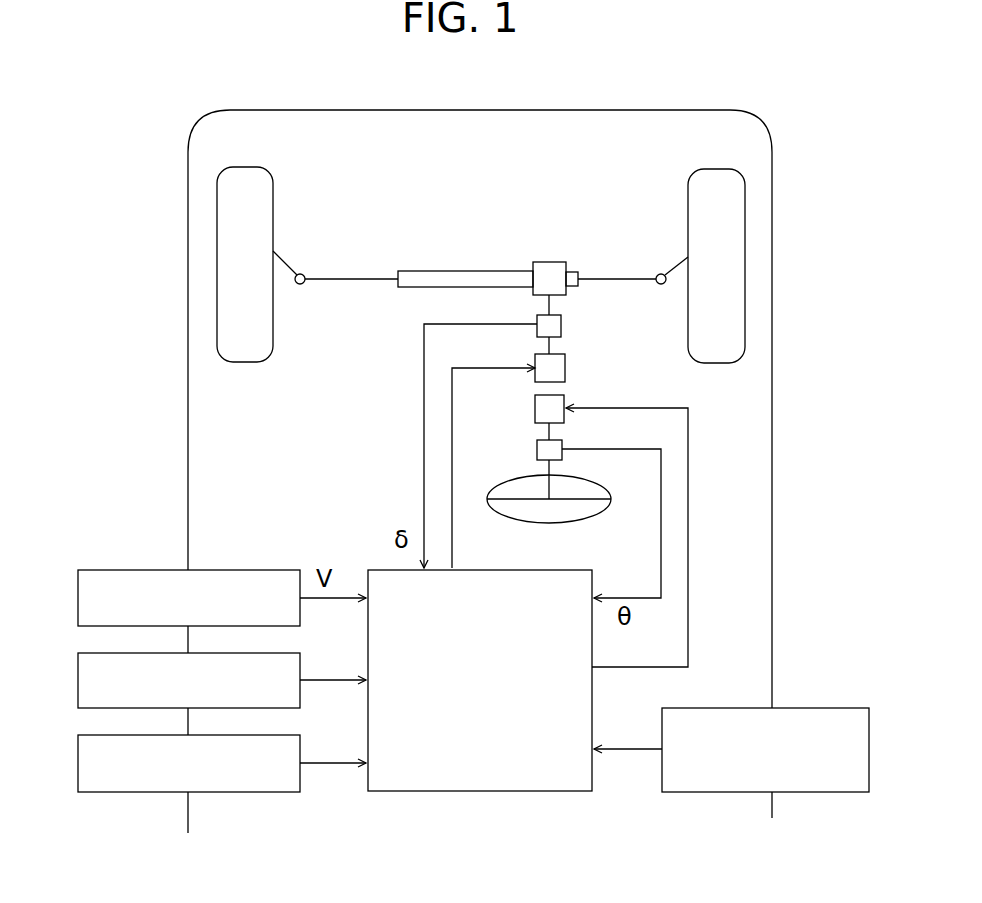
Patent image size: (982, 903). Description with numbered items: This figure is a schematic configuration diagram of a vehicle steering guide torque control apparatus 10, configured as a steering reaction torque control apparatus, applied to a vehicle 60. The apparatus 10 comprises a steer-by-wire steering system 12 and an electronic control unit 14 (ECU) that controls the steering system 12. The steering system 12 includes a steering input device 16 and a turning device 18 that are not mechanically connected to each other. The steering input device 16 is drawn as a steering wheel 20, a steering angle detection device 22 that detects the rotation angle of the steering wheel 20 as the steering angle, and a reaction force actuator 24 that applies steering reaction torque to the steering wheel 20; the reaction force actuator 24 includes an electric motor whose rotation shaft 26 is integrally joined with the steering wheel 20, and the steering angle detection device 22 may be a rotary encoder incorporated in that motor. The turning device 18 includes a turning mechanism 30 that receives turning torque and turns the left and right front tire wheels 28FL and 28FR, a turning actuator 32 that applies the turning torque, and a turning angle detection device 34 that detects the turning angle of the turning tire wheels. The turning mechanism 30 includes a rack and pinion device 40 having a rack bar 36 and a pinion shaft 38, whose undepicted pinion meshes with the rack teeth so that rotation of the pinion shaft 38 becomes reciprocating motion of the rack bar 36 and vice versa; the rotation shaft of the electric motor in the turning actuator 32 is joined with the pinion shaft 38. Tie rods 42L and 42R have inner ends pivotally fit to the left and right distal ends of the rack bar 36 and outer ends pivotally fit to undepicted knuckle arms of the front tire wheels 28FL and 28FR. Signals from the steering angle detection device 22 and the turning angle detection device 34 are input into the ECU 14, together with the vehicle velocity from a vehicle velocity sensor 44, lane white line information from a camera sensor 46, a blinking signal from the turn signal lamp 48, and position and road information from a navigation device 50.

The vehicle steering guide torque control apparatus 10 is at (360, 182).
The steer-by-wire steering system 12 is at (630, 232).
The electronic control unit 14 is at (467, 708).
The steering input device 16 is at (470, 445).
The turning device 18 is at (500, 265).
The steering wheel 20 is at (578, 520).
The steering angle detection device 22 is at (537, 449).
The reaction force actuator 24 is at (535, 408).
The rotation shaft 26 is at (551, 432).
The left front tire wheel 28FL is at (217, 277).
The right front tire wheel 28FR is at (745, 278).
The turning mechanism 30 is at (403, 294).
The turning actuator 32 is at (566, 368).
The turning angle detection device 34 is at (563, 326).
The rack bar 36 is at (355, 278).
The pinion shaft 38 is at (545, 302).
The rack and pinion device 40 is at (428, 288).
The left tie rod 42L is at (285, 258).
The right tie rod 42R is at (680, 262).
The vehicle velocity sensor 44 is at (78, 596).
The camera sensor 46 is at (78, 679).
The turn signal lamp 48 is at (78, 762).
The navigation device 50 is at (870, 750).
The vehicle 60 is at (772, 546).